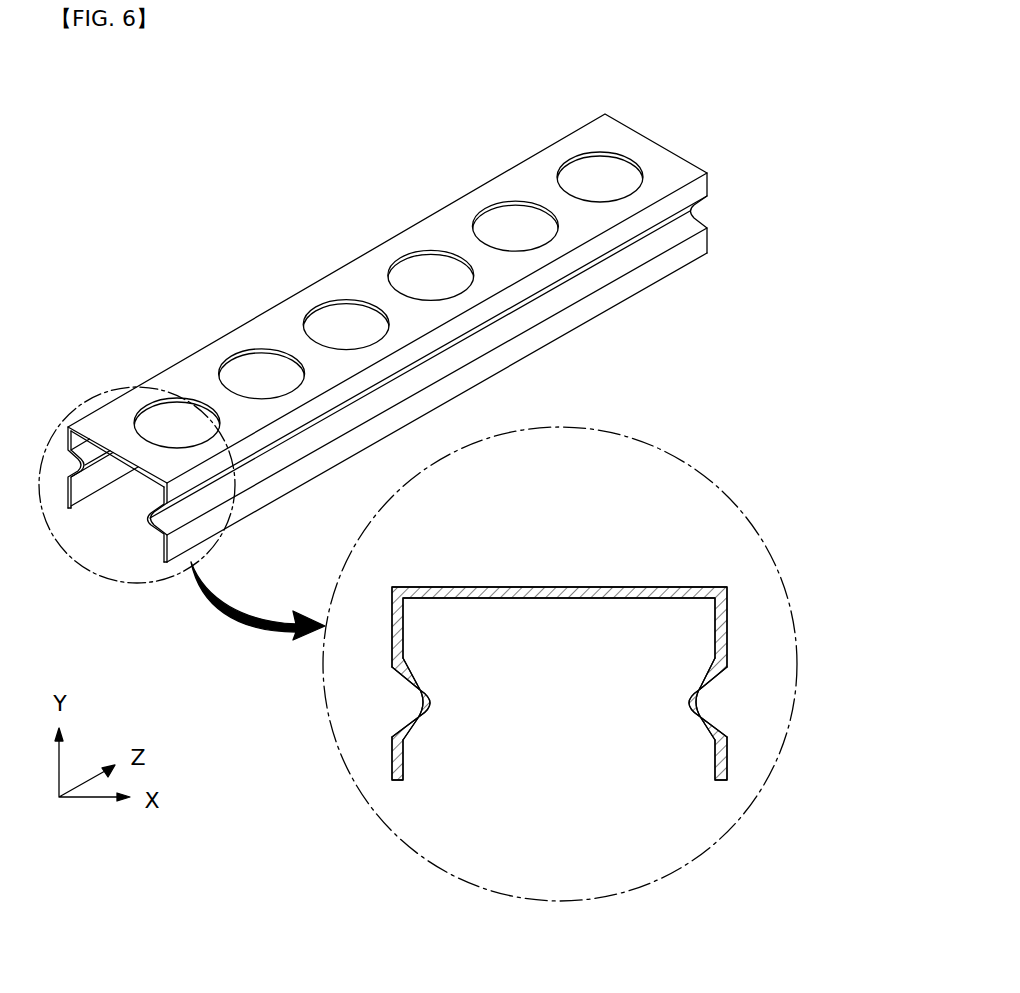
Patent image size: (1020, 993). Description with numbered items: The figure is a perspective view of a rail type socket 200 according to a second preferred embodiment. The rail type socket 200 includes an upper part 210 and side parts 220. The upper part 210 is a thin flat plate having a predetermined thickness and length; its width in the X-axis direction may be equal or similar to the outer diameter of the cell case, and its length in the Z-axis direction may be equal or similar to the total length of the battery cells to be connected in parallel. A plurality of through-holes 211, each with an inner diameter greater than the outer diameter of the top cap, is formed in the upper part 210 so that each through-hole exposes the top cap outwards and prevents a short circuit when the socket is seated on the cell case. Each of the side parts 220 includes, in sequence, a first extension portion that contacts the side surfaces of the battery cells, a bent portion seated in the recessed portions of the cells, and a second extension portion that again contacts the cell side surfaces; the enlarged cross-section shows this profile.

The rail type socket 200 is at (103, 228).
The upper part 210 is at (440, 282).
The through-holes 211 is at (610, 167).
The side parts 220 is at (737, 300).